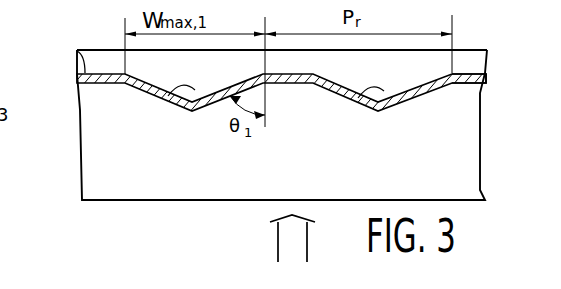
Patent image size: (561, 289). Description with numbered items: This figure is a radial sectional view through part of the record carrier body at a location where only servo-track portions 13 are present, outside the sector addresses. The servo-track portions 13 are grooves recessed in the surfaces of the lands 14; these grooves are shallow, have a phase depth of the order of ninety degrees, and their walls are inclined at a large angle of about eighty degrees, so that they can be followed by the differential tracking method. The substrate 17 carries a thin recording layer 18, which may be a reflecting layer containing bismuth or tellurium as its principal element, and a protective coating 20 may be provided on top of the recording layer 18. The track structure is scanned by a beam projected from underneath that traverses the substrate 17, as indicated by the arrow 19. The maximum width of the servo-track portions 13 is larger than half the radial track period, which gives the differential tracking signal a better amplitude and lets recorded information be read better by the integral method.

The servo-track portions 13 is at (168, 96).
The lands 14 is at (77, 50).
The substrate 17 is at (92, 170).
The recording layer 18 is at (465, 76).
The arrow 19 is at (295, 245).
The protective coating 20 is at (103, 62).